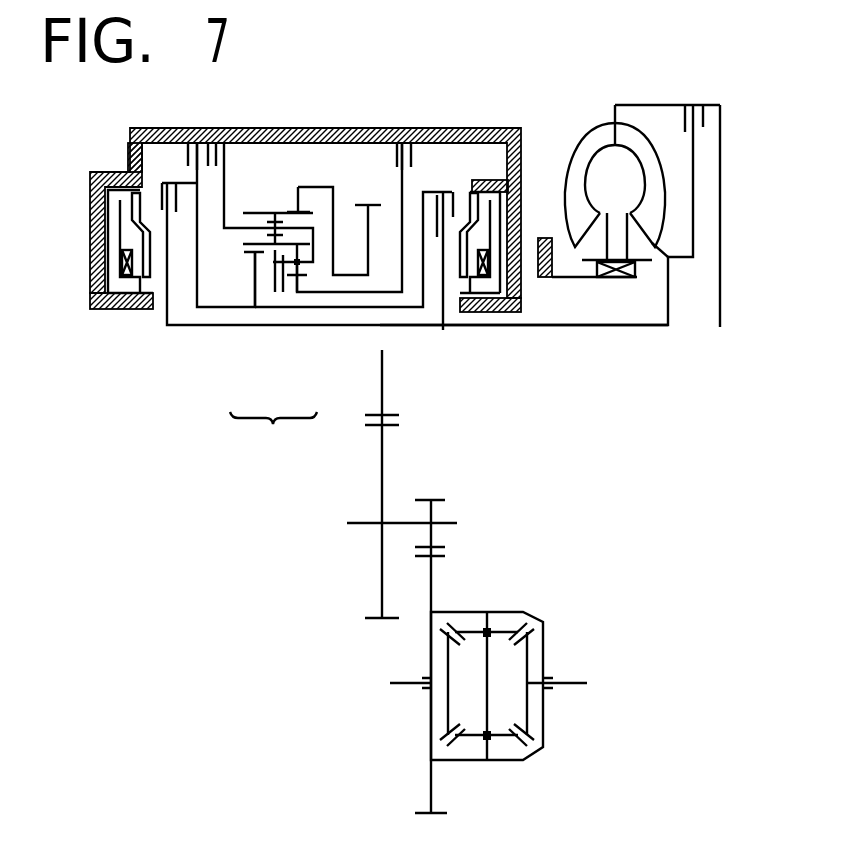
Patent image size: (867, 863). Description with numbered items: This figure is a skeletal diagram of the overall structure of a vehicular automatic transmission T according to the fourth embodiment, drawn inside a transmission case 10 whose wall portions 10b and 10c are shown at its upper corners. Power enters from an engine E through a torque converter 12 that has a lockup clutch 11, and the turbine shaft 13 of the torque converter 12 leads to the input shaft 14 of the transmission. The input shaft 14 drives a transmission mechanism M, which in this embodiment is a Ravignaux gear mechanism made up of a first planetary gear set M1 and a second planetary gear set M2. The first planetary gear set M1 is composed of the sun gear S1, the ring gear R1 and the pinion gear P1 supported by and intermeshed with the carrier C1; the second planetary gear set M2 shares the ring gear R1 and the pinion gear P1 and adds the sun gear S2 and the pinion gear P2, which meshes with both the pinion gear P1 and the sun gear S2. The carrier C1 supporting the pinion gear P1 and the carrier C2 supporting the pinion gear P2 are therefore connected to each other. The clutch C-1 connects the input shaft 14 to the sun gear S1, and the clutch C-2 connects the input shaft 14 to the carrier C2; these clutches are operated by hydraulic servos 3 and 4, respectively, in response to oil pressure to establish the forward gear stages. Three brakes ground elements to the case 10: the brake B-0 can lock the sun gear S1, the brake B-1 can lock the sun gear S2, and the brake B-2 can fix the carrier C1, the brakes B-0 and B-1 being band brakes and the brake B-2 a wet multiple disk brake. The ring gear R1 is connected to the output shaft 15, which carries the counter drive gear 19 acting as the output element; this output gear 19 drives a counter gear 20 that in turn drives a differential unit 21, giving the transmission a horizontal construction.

The hydraulic servo 3 is at (90, 300).
The hydraulic servo 4 is at (515, 294).
The transmission case 10 is at (307, 193).
The case front portion 10b is at (133, 135).
The case rear portion 10c is at (514, 140).
The lockup clutch 11 is at (720, 108).
The torque converter 12 is at (615, 112).
The turbine shaft 13 is at (616, 327).
The input shaft 14 is at (436, 330).
The output shaft 15 is at (348, 272).
The counter drive gear 19 is at (366, 204).
The counter gear 20 is at (419, 482).
The differential unit 21 is at (509, 600).
The brake B-0 is at (172, 132).
The brake B-1 is at (385, 133).
The brake B-2 is at (252, 132).
The clutch C-1 is at (186, 183).
The clutch C-2 is at (433, 201).
The carrier C1 is at (242, 245).
The carrier C2 is at (278, 254).
The sun gear S1 is at (249, 255).
The sun gear S2 is at (294, 280).
The pinion gear P1 is at (245, 212).
The pinion gear P2 is at (307, 273).
The ring gear R1 is at (296, 204).
The transmission mechanism M is at (273, 402).
The first planetary gear set M1 is at (252, 355).
The second planetary gear set M2 is at (302, 357).
The automatic transmission T is at (307, 190).
The engine E is at (742, 328).